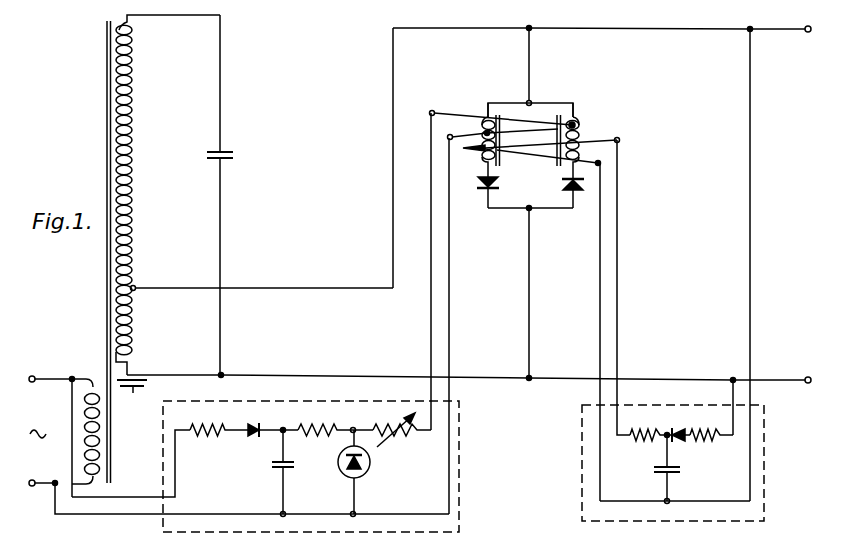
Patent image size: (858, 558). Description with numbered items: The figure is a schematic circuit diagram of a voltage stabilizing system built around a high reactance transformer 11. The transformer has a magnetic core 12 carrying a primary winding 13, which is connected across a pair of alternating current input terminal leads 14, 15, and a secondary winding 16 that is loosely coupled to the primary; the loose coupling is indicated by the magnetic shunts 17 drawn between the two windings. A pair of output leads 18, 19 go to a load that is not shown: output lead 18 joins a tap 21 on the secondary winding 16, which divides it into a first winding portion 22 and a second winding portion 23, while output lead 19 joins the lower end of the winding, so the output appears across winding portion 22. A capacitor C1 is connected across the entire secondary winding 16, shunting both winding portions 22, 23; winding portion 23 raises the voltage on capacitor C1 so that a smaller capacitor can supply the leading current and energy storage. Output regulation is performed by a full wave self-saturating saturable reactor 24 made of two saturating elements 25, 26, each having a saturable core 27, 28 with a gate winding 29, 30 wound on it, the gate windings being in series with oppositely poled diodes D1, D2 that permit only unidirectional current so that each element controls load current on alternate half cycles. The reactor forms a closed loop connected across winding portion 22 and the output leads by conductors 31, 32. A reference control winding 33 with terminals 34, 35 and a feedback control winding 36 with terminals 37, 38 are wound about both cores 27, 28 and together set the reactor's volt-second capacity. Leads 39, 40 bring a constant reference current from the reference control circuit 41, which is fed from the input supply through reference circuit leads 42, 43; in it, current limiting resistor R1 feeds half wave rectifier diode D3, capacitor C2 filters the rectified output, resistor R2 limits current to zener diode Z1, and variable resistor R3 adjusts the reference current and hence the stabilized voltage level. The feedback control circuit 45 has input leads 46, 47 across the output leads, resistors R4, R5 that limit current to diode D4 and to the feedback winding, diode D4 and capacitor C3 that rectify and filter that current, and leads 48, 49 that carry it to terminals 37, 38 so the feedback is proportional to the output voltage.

The high reactance transformer 11 is at (106, 19).
The magnetic core 12 is at (104, 165).
The primary winding 13 is at (87, 432).
The alternating current input terminal lead 14 is at (50, 377).
The alternating current input terminal lead 15 is at (42, 480).
The secondary winding 16 is at (138, 140).
The magnetic shunts 17 is at (134, 394).
The output lead 18 is at (719, 32).
The output lead 19 is at (665, 378).
The tap 21 is at (136, 286).
The first winding portion 22 is at (131, 324).
The second winding portion 23 is at (131, 183).
The full wave self-saturating saturable reactor 24 is at (556, 101).
The saturating element 25 is at (480, 104).
The saturating element 26 is at (584, 104).
The saturable core 27 is at (505, 153).
The saturable core 28 is at (553, 164).
The gate winding 29 is at (483, 126).
The gate winding 30 is at (585, 149).
The conductor 31 is at (531, 52).
The conductor 32 is at (528, 273).
The reference control winding 33 is at (441, 110).
The terminal 34 is at (430, 114).
The terminal 35 is at (448, 138).
The feedback control winding 36 is at (600, 140).
The terminal 37 is at (620, 140).
The terminal 38 is at (598, 163).
The lead 39 is at (430, 326).
The lead 40 is at (451, 331).
The reference control circuit 41 is at (459, 463).
The reference circuit lead 42 is at (123, 495).
The reference circuit lead 43 is at (123, 515).
The feedback control circuit 45 is at (765, 458).
The input lead 46 is at (731, 391).
The input lead 47 is at (752, 205).
The lead 48 is at (599, 318).
The lead 49 is at (618, 322).
The capacitor C1 is at (234, 156).
The capacitor C2 is at (292, 467).
The capacitor C3 is at (677, 470).
The diode D1 is at (482, 192).
The diode D2 is at (583, 193).
The diode D3 is at (255, 438).
The diode D4 is at (676, 441).
The resistor R1 is at (207, 437).
The resistor R2 is at (322, 437).
The variable resistor R3 is at (398, 437).
The resistor R4 is at (712, 438).
The resistor R5 is at (643, 443).
The zener diode Z1 is at (370, 472).